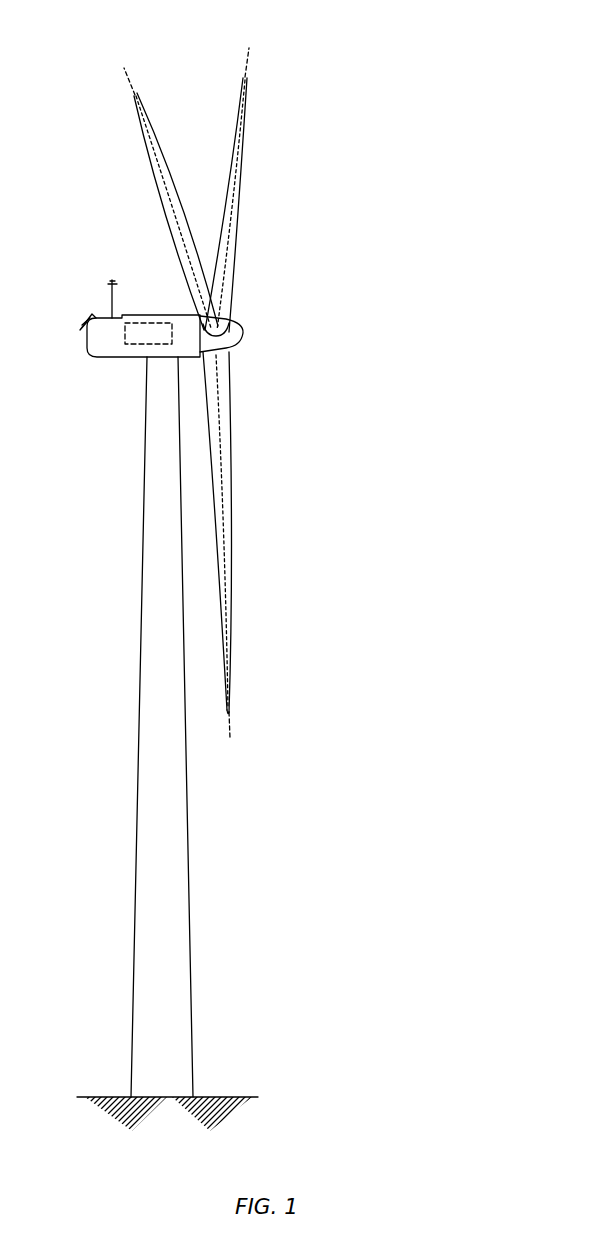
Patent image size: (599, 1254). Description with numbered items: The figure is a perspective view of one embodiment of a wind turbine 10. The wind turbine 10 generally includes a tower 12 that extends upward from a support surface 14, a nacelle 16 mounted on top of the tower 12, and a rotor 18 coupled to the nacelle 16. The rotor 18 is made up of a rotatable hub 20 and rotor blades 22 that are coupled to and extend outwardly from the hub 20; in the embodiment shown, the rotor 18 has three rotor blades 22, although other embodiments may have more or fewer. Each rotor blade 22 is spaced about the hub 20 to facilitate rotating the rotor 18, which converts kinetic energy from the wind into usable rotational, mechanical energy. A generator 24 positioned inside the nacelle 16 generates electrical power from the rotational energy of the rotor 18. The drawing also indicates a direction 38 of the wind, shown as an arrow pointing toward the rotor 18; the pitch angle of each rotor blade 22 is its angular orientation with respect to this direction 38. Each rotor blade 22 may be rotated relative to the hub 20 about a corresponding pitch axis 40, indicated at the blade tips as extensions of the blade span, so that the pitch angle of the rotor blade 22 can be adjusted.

The wind turbine 10 is at (412, 170).
The tower 12 is at (173, 788).
The support surface 14 is at (115, 1097).
The nacelle 16 is at (120, 358).
The rotor 18 is at (296, 267).
The rotatable hub 20 is at (240, 328).
The rotor blade 22 is at (230, 178).
The generator 24 is at (158, 322).
The direction of the wind 38 is at (362, 333).
The pitch axis 40 is at (124, 80).